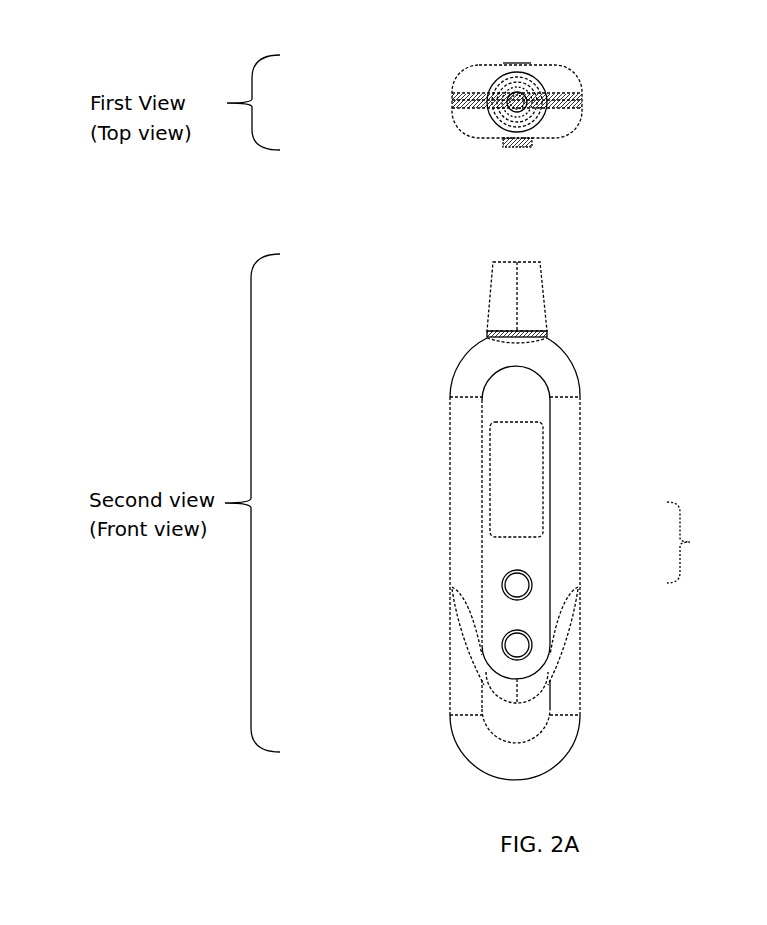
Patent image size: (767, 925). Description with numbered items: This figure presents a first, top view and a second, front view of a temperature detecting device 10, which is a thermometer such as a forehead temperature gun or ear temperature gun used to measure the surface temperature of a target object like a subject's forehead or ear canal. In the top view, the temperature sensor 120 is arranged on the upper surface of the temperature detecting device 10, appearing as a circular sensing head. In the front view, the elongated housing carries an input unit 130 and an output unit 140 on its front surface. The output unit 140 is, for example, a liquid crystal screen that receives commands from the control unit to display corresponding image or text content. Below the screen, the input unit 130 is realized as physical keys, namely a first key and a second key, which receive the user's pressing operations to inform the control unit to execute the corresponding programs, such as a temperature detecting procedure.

The temperature detecting device 10 is at (580, 118).
The temperature sensor 120 is at (522, 94).
The input unit 130 is at (512, 148).
The output unit 140 is at (543, 455).